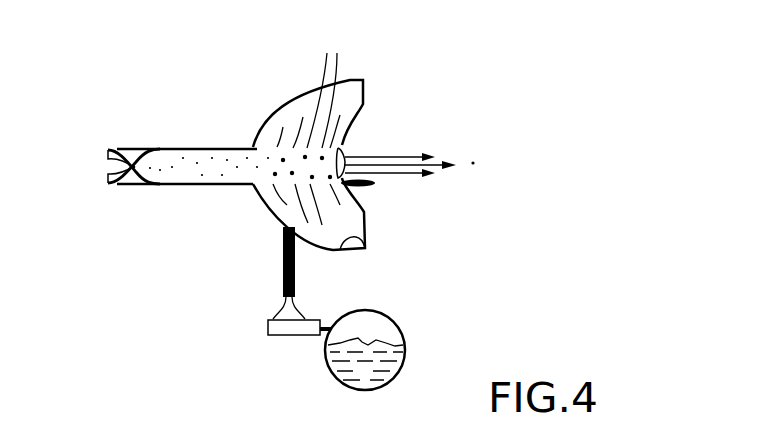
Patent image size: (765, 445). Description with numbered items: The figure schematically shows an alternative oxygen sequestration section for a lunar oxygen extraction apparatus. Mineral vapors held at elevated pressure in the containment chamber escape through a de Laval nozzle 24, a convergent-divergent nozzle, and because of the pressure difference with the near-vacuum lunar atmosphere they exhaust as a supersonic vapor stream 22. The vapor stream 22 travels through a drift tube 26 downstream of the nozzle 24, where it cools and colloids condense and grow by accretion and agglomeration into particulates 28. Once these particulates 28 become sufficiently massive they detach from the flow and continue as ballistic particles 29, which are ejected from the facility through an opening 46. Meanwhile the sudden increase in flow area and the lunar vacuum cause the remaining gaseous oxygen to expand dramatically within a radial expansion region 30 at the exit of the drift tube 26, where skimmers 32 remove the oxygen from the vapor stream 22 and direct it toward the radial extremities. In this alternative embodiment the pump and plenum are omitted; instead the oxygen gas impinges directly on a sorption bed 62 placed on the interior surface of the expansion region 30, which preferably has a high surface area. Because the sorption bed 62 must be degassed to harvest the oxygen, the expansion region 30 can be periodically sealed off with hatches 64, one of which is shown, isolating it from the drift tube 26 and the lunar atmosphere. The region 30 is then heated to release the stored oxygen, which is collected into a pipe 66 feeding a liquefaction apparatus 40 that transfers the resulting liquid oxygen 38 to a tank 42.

The vapor stream 22 is at (188, 172).
The de Laval nozzle 24 is at (137, 147).
The drift tube 26 is at (223, 148).
The particulates 28 is at (290, 174).
The ballistic particles 29 is at (475, 166).
The radial expansion region 30 is at (384, 54).
The skimmers 32 is at (308, 120).
The liquid oxygen 38 is at (373, 343).
The liquefaction apparatus 40 is at (302, 336).
The tank 42 is at (385, 386).
The opening 46 is at (367, 160).
The sorption bed 62 is at (365, 237).
The hatches 64 is at (368, 187).
The pipe 66 is at (295, 265).